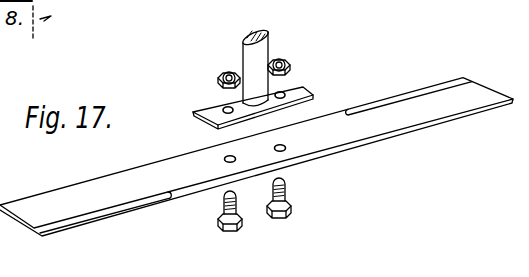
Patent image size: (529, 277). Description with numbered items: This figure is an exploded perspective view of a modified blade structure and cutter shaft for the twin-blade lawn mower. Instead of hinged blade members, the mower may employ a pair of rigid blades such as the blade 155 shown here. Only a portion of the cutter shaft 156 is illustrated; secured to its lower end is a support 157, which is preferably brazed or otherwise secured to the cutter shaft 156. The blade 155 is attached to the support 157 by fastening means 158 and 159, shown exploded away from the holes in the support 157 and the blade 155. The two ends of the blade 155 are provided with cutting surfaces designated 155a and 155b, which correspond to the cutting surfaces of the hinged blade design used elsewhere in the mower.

The blade 155 is at (188, 186).
The cutting surface 155a is at (93, 216).
The cutting surface 155b is at (424, 90).
The cutter shaft 156 is at (270, 40).
The support 157 is at (306, 90).
The fastening means 158 is at (279, 218).
The fastening means 159 is at (218, 78).